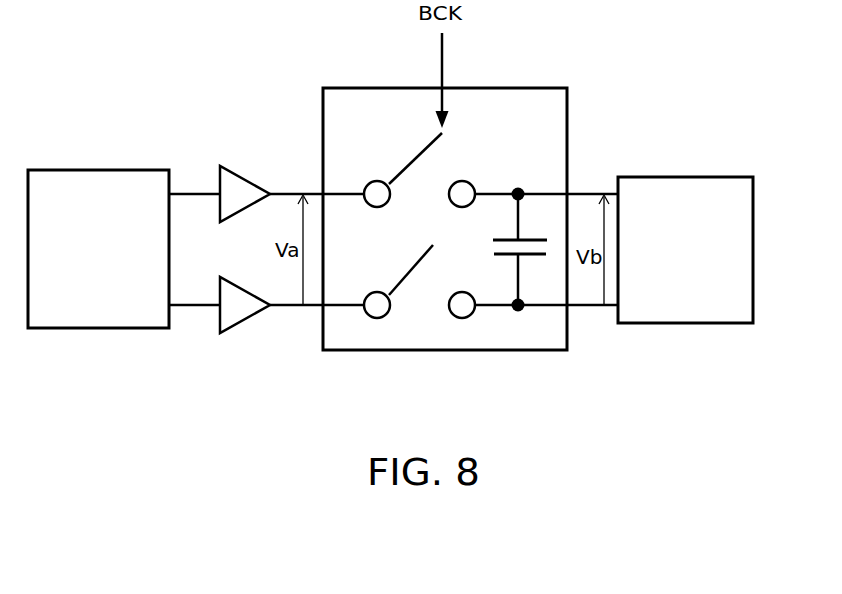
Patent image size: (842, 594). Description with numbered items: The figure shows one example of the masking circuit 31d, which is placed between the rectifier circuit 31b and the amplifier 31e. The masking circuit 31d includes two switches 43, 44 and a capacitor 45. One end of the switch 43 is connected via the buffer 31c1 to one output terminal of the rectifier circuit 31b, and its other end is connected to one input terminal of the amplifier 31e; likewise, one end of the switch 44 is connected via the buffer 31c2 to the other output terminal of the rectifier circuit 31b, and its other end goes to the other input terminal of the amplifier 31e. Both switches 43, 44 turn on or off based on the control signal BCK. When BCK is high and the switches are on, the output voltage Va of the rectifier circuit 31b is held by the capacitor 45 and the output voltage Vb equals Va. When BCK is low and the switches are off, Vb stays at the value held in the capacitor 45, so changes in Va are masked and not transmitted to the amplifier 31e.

The rectifier circuit 31b is at (103, 330).
The buffer 31c1 is at (250, 172).
The buffer 31c2 is at (256, 318).
The masking circuit 31d is at (507, 88).
The switch 43 is at (407, 167).
The switch 44 is at (408, 268).
The capacitor 45 is at (512, 237).
The amplifier 31e is at (697, 177).